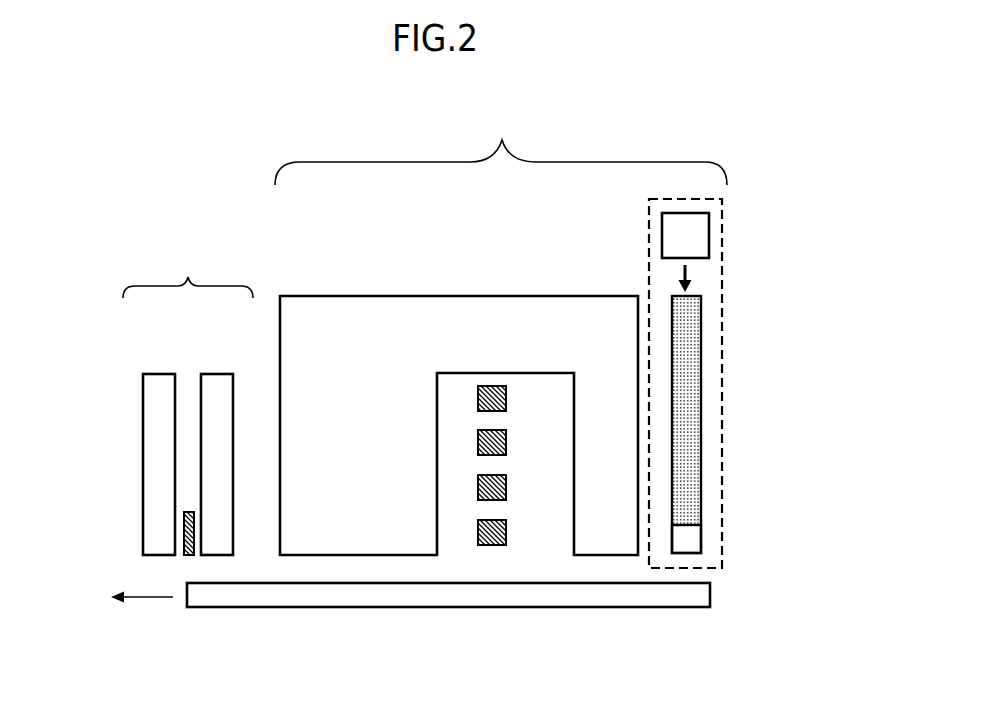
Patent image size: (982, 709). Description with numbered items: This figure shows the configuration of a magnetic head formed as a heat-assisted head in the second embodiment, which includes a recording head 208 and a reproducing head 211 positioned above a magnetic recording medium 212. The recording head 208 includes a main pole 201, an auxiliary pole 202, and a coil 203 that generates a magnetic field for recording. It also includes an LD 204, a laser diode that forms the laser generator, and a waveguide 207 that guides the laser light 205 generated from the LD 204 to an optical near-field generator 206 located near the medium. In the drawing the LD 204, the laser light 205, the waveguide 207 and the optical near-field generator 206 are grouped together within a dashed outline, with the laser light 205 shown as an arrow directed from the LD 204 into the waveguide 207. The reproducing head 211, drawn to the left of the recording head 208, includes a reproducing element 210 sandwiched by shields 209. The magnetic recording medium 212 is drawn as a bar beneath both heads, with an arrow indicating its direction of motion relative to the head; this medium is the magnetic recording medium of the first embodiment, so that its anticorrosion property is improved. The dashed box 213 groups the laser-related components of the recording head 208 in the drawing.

The main pole 201 is at (618, 487).
The auxiliary pole 202 is at (407, 450).
The coil 203 is at (506, 402).
The LD (Laser Diode) 204 is at (703, 237).
The laser light 205 is at (690, 268).
The optical near-field generator 206 is at (692, 540).
The waveguide 207 is at (703, 323).
The recording head 208 is at (501, 149).
The shields 209 is at (221, 382).
The reproducing element 210 is at (185, 532).
The reproducing head 211 is at (188, 273).
The magnetic recording medium 212 is at (693, 597).
The supply section 213 is at (649, 226).